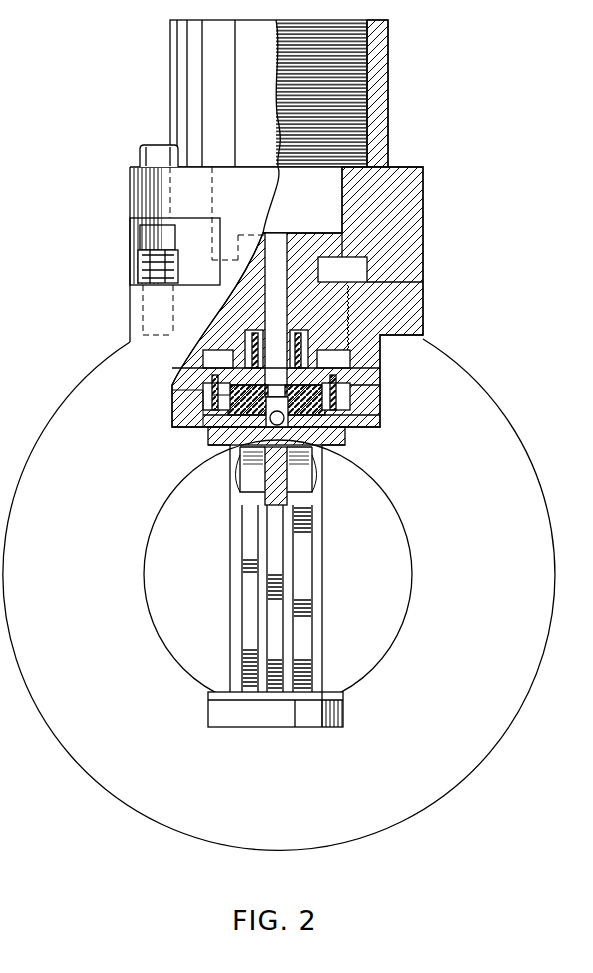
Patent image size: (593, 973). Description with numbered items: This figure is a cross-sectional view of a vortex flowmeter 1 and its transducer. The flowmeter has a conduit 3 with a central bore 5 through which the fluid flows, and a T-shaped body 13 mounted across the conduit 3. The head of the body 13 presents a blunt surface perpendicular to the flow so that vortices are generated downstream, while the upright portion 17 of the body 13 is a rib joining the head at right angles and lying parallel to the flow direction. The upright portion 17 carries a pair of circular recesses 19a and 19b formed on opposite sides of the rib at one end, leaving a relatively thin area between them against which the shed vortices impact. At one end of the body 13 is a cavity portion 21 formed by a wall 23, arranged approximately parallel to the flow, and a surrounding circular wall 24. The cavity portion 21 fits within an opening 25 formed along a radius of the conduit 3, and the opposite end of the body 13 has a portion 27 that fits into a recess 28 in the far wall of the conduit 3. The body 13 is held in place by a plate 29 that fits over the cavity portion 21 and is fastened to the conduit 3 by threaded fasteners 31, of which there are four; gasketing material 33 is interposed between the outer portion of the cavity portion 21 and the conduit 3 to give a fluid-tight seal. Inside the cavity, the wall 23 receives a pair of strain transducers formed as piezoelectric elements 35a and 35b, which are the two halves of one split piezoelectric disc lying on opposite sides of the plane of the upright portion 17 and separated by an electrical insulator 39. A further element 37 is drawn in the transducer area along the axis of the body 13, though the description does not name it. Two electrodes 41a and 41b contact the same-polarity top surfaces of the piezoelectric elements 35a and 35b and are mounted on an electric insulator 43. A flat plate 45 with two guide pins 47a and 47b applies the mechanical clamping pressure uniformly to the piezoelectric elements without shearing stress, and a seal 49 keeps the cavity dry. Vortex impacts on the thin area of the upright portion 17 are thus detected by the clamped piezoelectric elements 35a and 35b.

The vortex flowmeter 1 is at (417, 58).
The conduit 3 is at (70, 745).
The central bore 5 is at (148, 608).
The T-shaped body 13 is at (230, 615).
The upright portion 17 is at (277, 590).
The circular recess 19a is at (290, 484).
The circular recess 19b is at (258, 470).
The cavity portion 21 is at (343, 433).
The wall 23 is at (312, 453).
The circular wall 24 is at (352, 360).
The opening 25 is at (230, 447).
The portion 27 is at (332, 712).
The recess 28 is at (323, 728).
The plate 29 is at (135, 197).
The threaded fastener 31 is at (141, 150).
The gasketing material 33 is at (434, 290).
The piezoelectric element 35a is at (236, 450).
The piezoelectric element 35b is at (322, 435).
The valve stem 37 is at (316, 262).
The electrical insulator 39 is at (205, 400).
The electrode 41a is at (214, 400).
The electrode 41b is at (170, 408).
The electric insulator 43 is at (343, 397).
The flat plate 45 is at (320, 284).
The guide pin 47a is at (212, 430).
The guide pin 47b is at (338, 407).
The seal 49 is at (248, 348).